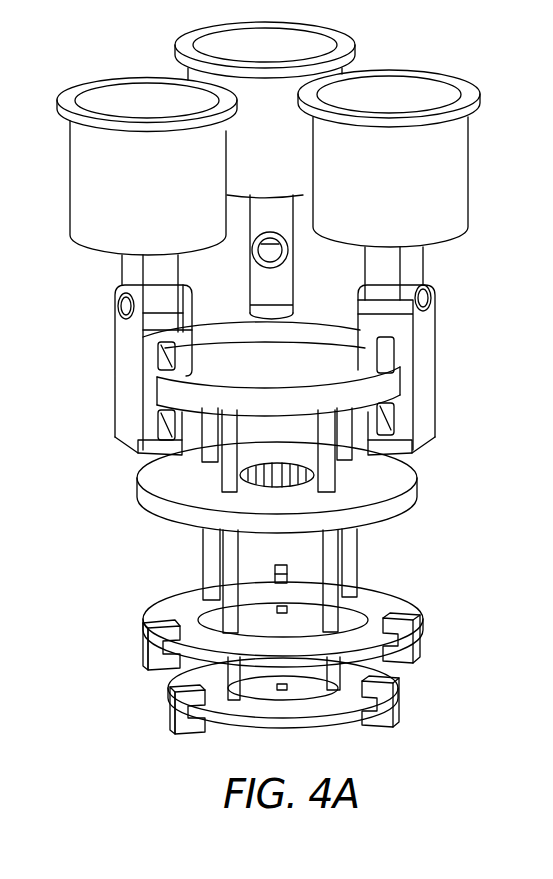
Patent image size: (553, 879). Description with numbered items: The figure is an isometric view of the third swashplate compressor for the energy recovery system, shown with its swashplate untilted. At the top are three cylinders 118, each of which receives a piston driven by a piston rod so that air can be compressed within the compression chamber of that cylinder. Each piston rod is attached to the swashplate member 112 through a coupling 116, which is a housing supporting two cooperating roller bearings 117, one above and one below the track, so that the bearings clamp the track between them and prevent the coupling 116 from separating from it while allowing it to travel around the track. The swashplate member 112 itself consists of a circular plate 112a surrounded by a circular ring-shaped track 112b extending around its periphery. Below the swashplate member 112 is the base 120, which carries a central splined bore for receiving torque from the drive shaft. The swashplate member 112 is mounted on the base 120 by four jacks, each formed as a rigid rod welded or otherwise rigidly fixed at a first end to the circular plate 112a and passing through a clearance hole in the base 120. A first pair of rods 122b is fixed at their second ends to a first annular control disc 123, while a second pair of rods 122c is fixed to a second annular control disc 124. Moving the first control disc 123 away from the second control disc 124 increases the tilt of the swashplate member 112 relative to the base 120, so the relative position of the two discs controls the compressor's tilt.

The swashplate member 112 is at (272, 322).
The circular plate 112a is at (160, 390).
The circular ring-shaped track 112b is at (227, 325).
The coupling 116 is at (425, 370).
The roller bearing 117 is at (393, 409).
The cylinder 118 is at (462, 167).
The base 120 is at (415, 490).
The first pair of rods 122b is at (208, 568).
The second pair of rods 122c is at (232, 711).
The first annular control disc 123 is at (396, 602).
The second annular control disc 124 is at (343, 716).